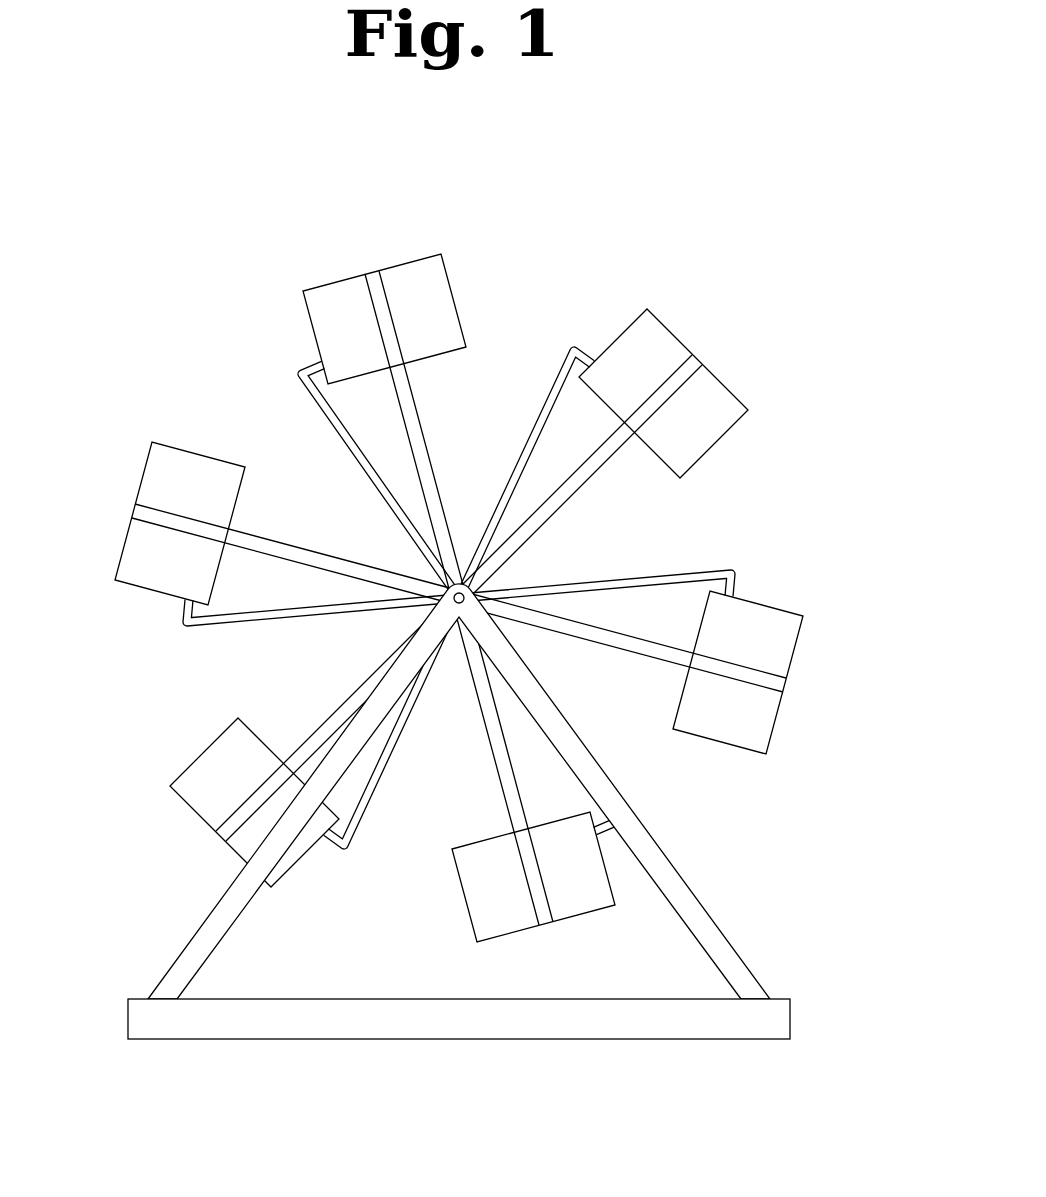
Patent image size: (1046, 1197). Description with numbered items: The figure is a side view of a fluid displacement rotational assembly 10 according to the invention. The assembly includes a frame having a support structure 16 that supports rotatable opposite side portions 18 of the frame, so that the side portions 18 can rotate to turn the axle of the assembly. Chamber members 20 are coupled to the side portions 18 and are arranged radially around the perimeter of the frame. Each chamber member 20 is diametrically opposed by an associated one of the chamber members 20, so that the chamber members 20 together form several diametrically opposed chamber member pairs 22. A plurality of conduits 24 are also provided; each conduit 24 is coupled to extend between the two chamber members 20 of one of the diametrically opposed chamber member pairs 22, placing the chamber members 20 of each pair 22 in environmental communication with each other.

The fluid displacement rotational assembly 10 is at (278, 135).
The support structure 16 is at (717, 947).
The side portions 18 is at (680, 373).
The chamber members 20 is at (657, 342).
The diametrically opposed chamber member pairs 22 is at (356, 256).
The conduits 24 is at (647, 575).